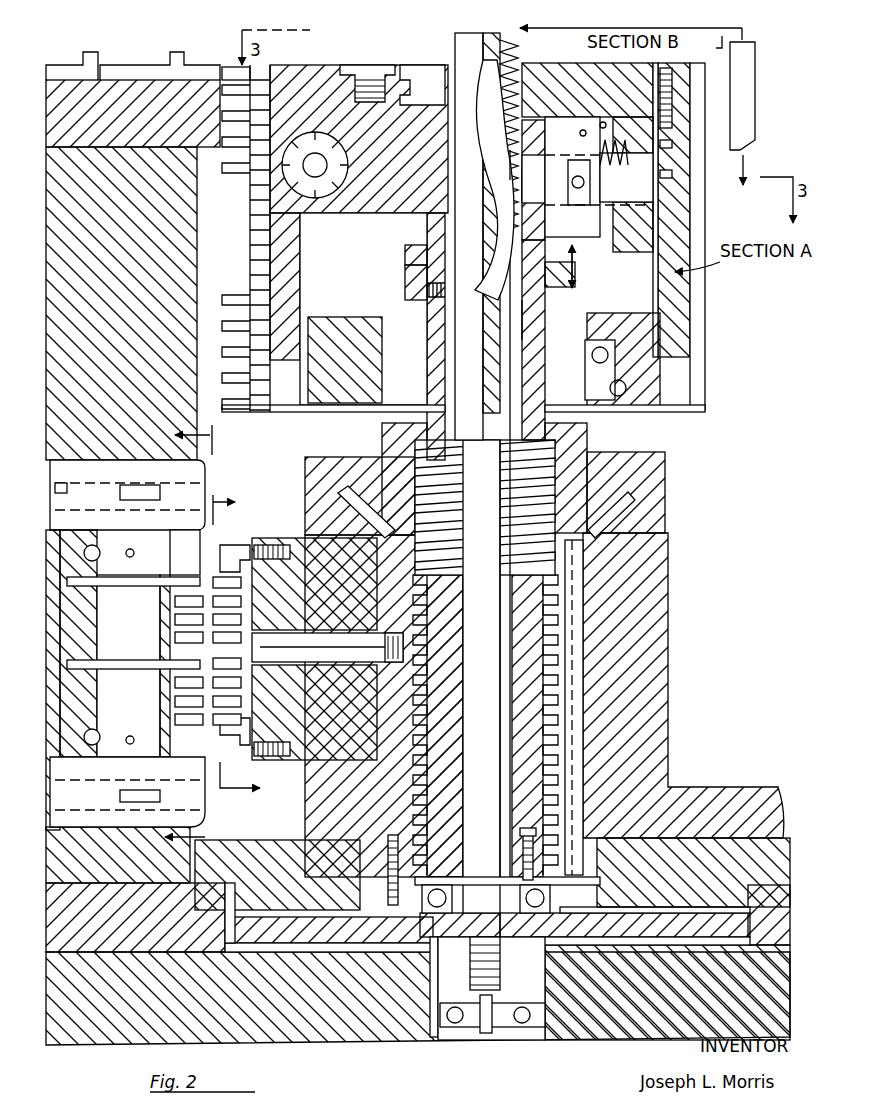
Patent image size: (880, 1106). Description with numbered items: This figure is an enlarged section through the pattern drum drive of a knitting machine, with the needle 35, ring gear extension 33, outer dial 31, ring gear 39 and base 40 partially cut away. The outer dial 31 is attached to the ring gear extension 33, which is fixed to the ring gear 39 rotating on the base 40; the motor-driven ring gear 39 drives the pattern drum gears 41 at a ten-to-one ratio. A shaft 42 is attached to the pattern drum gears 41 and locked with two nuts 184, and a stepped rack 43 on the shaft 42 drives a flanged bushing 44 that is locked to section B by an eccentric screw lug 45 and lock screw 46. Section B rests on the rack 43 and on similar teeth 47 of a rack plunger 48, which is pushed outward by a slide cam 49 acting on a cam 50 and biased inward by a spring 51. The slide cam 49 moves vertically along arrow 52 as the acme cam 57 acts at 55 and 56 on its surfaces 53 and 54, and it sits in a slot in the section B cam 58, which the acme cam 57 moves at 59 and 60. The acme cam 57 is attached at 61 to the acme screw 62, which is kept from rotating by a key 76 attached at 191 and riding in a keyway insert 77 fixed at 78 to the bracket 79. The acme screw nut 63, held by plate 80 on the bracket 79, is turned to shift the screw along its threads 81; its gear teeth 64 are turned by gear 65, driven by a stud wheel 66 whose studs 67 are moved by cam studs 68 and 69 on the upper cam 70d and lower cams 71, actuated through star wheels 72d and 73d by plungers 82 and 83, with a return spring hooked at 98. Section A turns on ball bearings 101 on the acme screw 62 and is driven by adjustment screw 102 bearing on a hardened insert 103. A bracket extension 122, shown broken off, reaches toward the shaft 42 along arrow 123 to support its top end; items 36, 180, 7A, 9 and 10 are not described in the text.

The outer dial 31 is at (186, 90).
The ring gear extension 33 is at (188, 248).
The needle 35 is at (62, 66).
The top plate 36 is at (135, 66).
The ring gear 39 is at (172, 935).
The base 40 is at (355, 1025).
The pattern drum gears 41 is at (632, 940).
The shaft 42 is at (497, 682).
The stepped rack 43 is at (490, 105).
The flanged bushing 44 is at (437, 180).
The eccentric screw lug 45 is at (427, 75).
The lock screw 46 is at (350, 70).
The teeth 47 is at (512, 168).
The rack plunger 48 is at (525, 188).
The slide cam 49 is at (515, 224).
The cam 50 is at (574, 165).
The spring 51 is at (645, 208).
The arrow 52 is at (576, 262).
The surface 53 is at (540, 237).
The surface 54 is at (565, 300).
The acme cam contact point 55 is at (412, 245).
The acme cam contact point 56 is at (412, 318).
The acme cam 57 is at (410, 268).
The section B cam 58 is at (658, 270).
The cam surface 59 is at (522, 315).
The cam surface 60 is at (522, 350).
The attachment point 61 is at (410, 293).
The acme screw 62 is at (432, 357).
The acme screw nut 63 is at (385, 437).
The gear teeth 64 is at (635, 535).
The gear 65 is at (340, 515).
The stud wheel 66 is at (272, 556).
The studs 67 is at (222, 555).
The cam studs 68 is at (166, 549).
The cam studs 69 is at (178, 730).
The upper stud cam 70d is at (192, 492).
The lower cams 71 is at (196, 802).
The upper star wheel 72d is at (125, 586).
The lower star wheel 73d is at (130, 660).
The key 76 is at (518, 858).
The keyway insert 77 is at (573, 727).
The attachment point 78 is at (580, 683).
The bracket 79 is at (660, 630).
The plate 80 is at (627, 458).
The threads 81 is at (485, 448).
The upper plungers 82 is at (215, 600).
The lower plungers 83 is at (212, 670).
The hook 98 is at (66, 490).
The ball bearings 101 is at (622, 378).
The adjustment screw 102 is at (317, 198).
The hardened insert 103 is at (665, 178).
The bracket extension 122 is at (745, 100).
The arrow 123 is at (711, 42).
The support block 180 is at (692, 838).
The nuts 184 is at (432, 950).
The attachment point 191 is at (528, 830).
The top cover block 7A is at (605, 95).
The section line 9 is at (198, 634).
The section line 10 is at (248, 646).